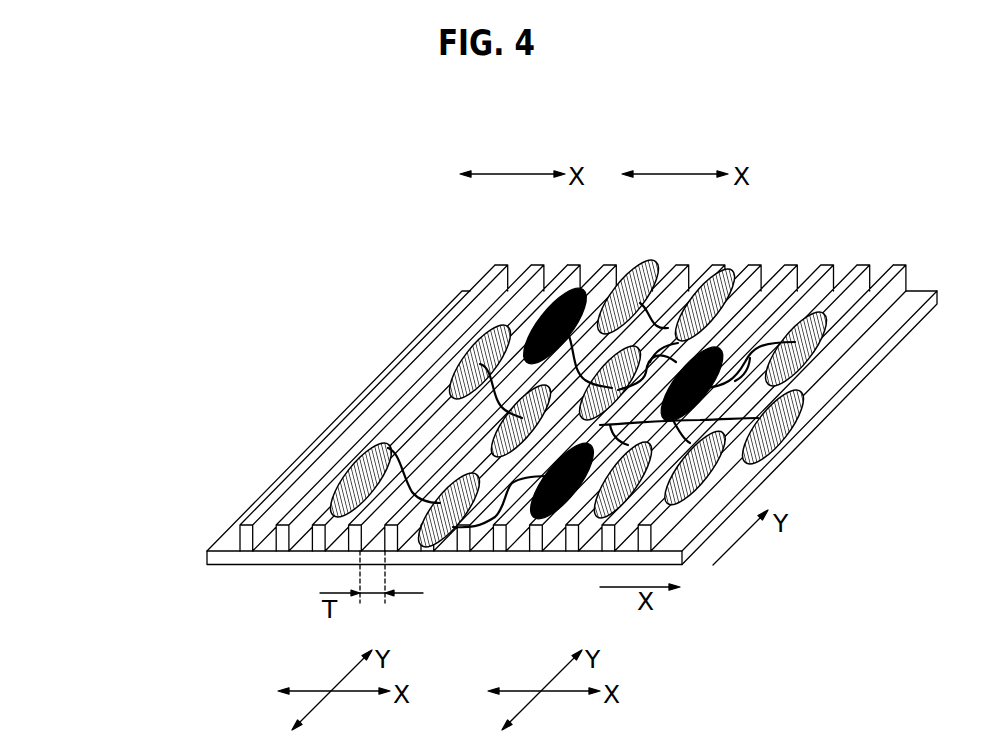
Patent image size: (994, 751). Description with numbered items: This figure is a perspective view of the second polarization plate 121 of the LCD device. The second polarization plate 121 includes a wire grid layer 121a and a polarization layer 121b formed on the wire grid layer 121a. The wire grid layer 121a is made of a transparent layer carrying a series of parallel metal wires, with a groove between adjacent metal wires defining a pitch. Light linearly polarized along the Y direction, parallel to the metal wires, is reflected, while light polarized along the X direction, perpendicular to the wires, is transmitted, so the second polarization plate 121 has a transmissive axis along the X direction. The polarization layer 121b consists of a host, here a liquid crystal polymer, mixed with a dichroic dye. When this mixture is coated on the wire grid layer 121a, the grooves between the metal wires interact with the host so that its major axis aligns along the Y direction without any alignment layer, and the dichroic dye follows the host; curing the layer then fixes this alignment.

The second polarization plate 121 is at (620, 101).
The wire grid layer 121a is at (252, 511).
The polarization layer 121b is at (888, 165).